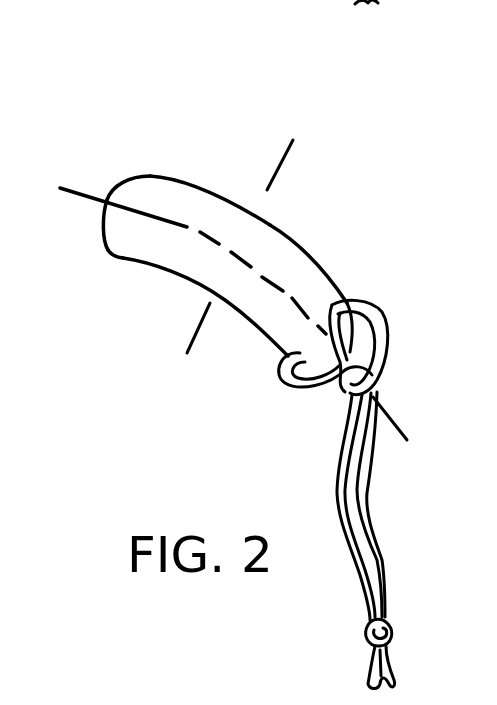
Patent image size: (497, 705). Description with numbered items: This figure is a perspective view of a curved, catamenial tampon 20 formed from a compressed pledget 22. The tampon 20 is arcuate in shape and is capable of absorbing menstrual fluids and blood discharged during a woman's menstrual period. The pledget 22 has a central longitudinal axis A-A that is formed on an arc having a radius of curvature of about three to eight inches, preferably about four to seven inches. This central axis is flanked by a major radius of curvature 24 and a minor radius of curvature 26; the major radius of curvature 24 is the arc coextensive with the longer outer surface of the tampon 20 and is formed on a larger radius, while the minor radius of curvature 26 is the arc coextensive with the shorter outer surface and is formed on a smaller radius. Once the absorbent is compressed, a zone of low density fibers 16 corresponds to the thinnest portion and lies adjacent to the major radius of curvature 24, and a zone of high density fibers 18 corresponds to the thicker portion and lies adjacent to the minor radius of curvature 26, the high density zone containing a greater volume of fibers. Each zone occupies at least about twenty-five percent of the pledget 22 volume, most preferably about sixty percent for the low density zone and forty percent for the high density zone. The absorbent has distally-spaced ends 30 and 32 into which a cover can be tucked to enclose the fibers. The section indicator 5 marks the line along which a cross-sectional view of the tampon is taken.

The curved catamenial tampon 20 is at (133, 98).
The zone of low density fibers 16 is at (149, 188).
The zone of high density fibers 18 is at (125, 239).
The compressed pledget 22 is at (315, 253).
The major radius of curvature 24 is at (206, 198).
The minor radius of curvature 26 is at (153, 267).
The distally-spaced end 30 is at (116, 189).
The distally-spaced end 32 is at (368, 350).
The section line 5- 5 is at (330, 163).